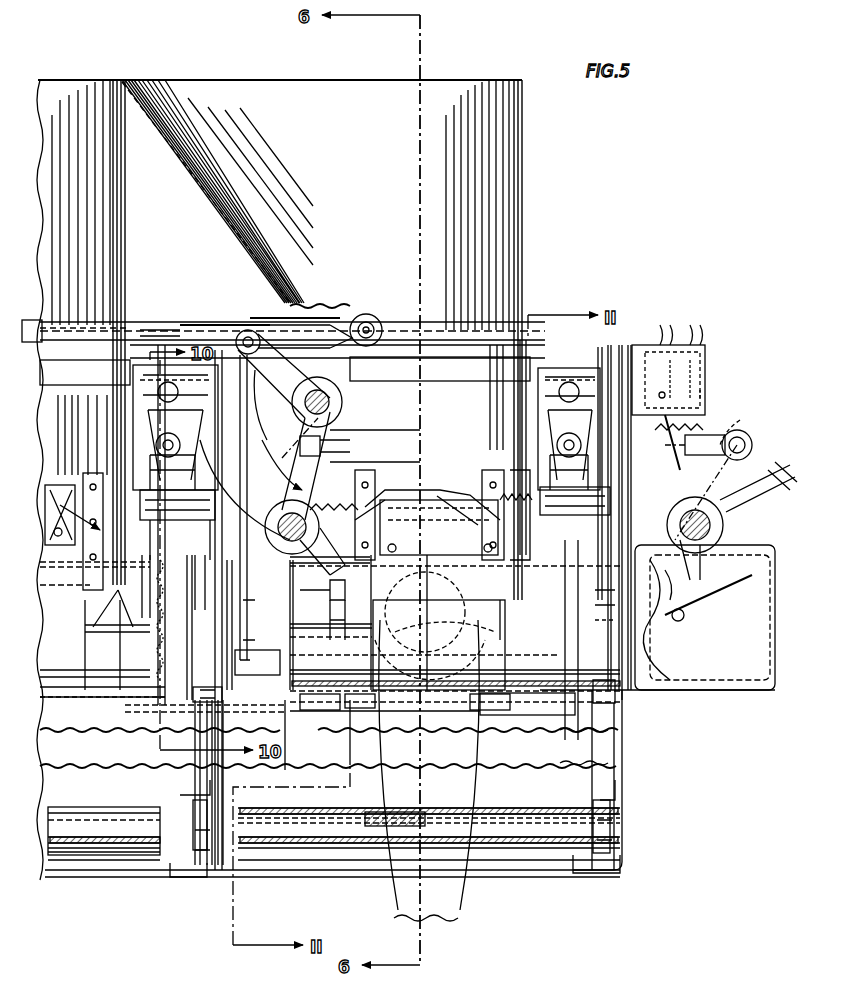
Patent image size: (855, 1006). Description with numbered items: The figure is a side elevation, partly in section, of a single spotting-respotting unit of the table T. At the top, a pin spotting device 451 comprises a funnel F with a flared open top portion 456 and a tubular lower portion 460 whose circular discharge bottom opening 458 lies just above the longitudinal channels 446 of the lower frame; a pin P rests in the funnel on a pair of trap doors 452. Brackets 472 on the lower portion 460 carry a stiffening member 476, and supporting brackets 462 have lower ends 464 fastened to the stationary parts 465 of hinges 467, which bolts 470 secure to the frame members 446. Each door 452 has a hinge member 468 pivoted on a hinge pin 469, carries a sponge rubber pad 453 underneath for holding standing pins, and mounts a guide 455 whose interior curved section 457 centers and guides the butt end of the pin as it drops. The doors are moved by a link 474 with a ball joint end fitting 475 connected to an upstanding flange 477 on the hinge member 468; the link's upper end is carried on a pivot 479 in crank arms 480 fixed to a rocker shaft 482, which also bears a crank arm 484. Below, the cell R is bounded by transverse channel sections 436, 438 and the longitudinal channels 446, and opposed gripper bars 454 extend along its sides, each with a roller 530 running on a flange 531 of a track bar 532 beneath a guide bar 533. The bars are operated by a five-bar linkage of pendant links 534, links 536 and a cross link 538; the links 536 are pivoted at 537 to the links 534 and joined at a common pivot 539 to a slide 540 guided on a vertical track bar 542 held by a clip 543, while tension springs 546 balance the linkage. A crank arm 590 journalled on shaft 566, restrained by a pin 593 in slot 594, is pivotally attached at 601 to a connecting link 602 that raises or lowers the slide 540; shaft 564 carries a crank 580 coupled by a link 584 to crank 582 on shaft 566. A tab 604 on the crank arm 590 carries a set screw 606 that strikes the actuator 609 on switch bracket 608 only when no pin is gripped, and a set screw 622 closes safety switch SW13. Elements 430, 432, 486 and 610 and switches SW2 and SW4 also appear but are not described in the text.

The housing 430 is at (740, 690).
The bracket 432 is at (714, 614).
The transverse channel section 436 is at (623, 740).
The transverse channel section 438 is at (218, 880).
The longitudinal channel 446 is at (82, 750).
The pin spotting device 451 is at (126, 230).
The trap door 452 is at (430, 641).
The sponge rubber pad 453 is at (345, 713).
The gripper bar 454 is at (118, 866).
The guide 455 is at (108, 602).
The open top portion 456 is at (286, 80).
The interior curved section 457 is at (425, 612).
The discharge bottom opening 458 is at (498, 614).
The tubular lower portion 460 is at (231, 346).
The supporting bracket 462 is at (274, 595).
The lower end of bracket 464 is at (387, 706).
The stationary part of hinge 465 is at (370, 677).
The hinge 467 is at (335, 713).
The hinge member 468 is at (387, 713).
The hinge pin 469 is at (254, 691).
The bolt 470 is at (272, 648).
The bracket 472 is at (112, 330).
The link 474 is at (290, 427).
The ball joint end fitting 475 is at (270, 614).
The stiffening member 476 is at (283, 332).
The upstanding flange 477 is at (238, 666).
The pivot 479 is at (244, 328).
The crank arm 480 is at (282, 336).
The rocker shaft 482 is at (305, 343).
The crank arm 484 is at (338, 314).
The arm 486 is at (162, 328).
The roller 530 is at (195, 866).
The flange 531 is at (200, 880).
The track bar 532 is at (210, 876).
The guide bar 533 is at (205, 800).
The link 534 is at (150, 752).
The link 536 is at (143, 415).
The pivot 537 is at (184, 610).
The cross link 538 is at (130, 586).
The common pivot 539 is at (215, 323).
The slide 540 is at (627, 345).
The track bar 542 is at (220, 534).
The clip 543 is at (673, 620).
The tension spring 546 is at (695, 634).
The shaft 564 is at (294, 512).
The shaft 566 is at (657, 617).
The crank 580 is at (375, 452).
The crank 582 is at (752, 419).
The link 584 is at (522, 432).
The crank arm 590 is at (222, 510).
The pin 593 is at (715, 498).
The slot 594 is at (490, 557).
The pivot 601 is at (558, 453).
The connecting link 602 is at (182, 440).
The tab 604 is at (541, 533).
The set screw 606 is at (766, 436).
The switch bracket 608 is at (672, 344).
The switch actuator 609 is at (670, 430).
The link 610 is at (360, 506).
The set screw 622 is at (728, 504).
The funnel F is at (128, 194).
The cell R is at (75, 872).
The table T is at (628, 710).
The pin P is at (464, 903).
The switch SW2 is at (420, 482).
The switch SW4 is at (72, 529).
The switch SW13 is at (690, 385).